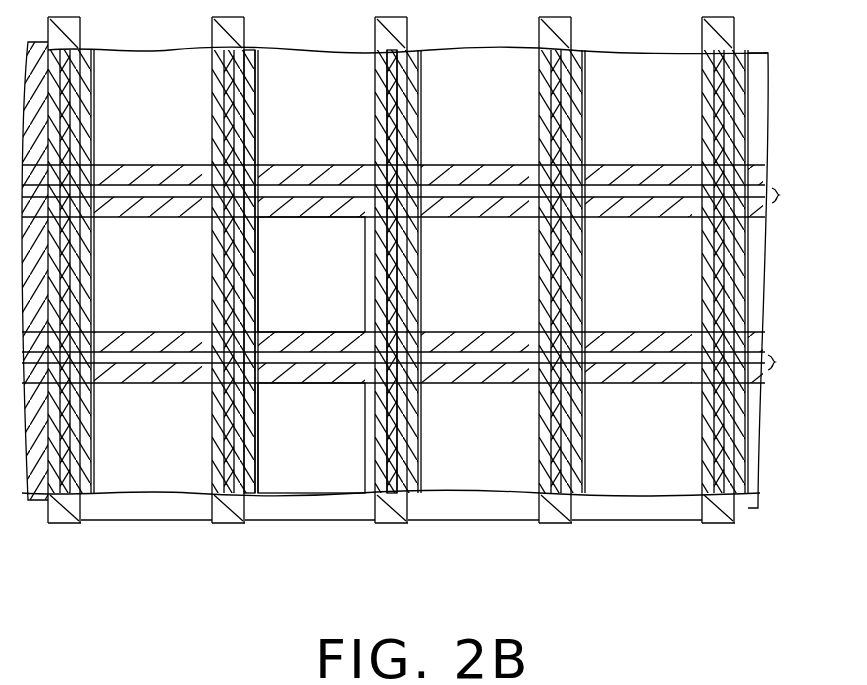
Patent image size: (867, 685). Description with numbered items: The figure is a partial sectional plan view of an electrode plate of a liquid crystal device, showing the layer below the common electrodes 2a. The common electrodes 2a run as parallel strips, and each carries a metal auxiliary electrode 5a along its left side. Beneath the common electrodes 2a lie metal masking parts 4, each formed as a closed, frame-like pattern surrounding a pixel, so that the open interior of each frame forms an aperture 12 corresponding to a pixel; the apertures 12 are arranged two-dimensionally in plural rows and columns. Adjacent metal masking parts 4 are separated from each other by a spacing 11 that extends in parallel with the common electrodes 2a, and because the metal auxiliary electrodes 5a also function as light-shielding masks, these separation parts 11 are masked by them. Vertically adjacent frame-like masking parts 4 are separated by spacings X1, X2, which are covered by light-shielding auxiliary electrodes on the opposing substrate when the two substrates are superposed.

The metal auxiliary electrode 5a is at (67, 523).
The common electrode 2a is at (145, 523).
The metal masking part 4 is at (247, 490).
The spacing (separation part) 11 is at (390, 490).
The aperture 12 is at (322, 285).
The spacing between vertically adjacent masking parts X1 is at (785, 195).
The spacing between vertically adjacent masking parts X2 is at (783, 362).